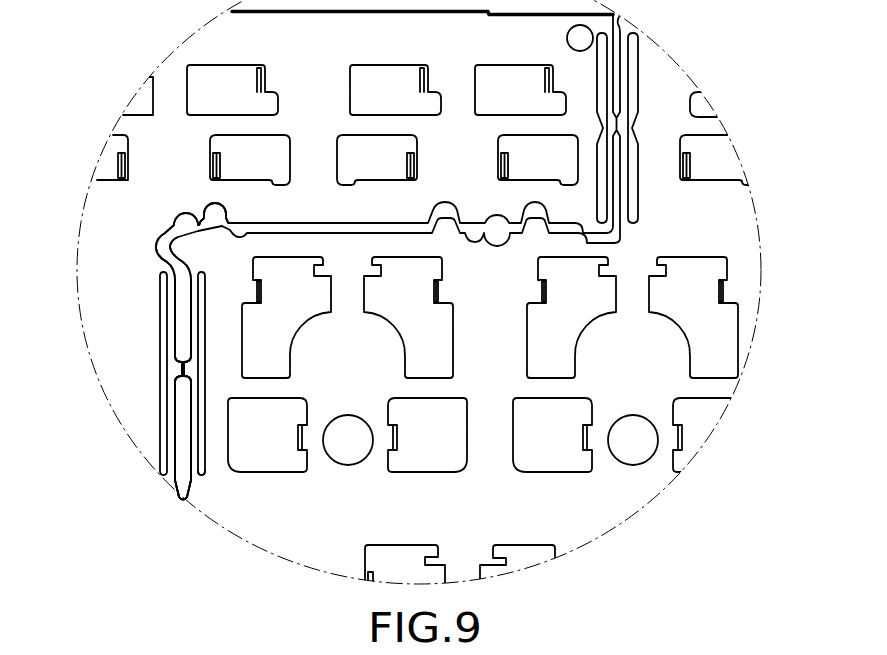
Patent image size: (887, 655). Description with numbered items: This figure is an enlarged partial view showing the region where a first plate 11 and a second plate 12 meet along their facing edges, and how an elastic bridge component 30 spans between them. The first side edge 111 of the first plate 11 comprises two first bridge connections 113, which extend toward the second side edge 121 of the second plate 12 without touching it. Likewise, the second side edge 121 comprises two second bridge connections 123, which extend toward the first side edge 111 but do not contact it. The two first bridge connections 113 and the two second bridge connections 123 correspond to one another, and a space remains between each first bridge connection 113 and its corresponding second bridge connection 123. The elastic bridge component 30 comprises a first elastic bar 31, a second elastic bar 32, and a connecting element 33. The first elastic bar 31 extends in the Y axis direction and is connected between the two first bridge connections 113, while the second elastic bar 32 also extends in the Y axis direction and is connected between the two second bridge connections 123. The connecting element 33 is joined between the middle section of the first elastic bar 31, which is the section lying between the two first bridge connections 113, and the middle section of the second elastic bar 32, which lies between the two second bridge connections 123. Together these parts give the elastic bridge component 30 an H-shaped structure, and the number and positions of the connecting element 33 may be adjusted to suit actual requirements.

The first plate 11 is at (667, 87).
The second plate 12 is at (180, 72).
The first side edge 111 is at (205, 325).
The first bridge connections 113 is at (155, 242).
The second side edge 121 is at (165, 366).
The second bridge connections 123 is at (172, 268).
The elastic bridge component 30 is at (158, 292).
The first elastic bar 31 is at (193, 428).
The second elastic bar 32 is at (173, 343).
The connecting element 33 is at (182, 374).